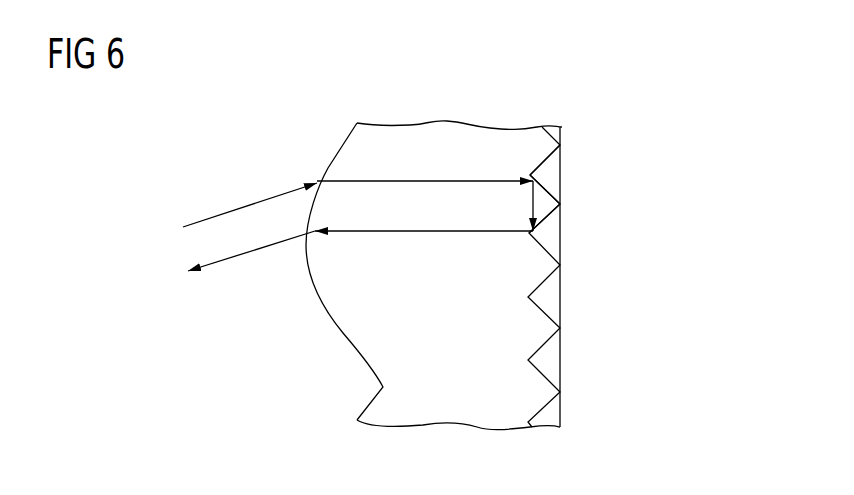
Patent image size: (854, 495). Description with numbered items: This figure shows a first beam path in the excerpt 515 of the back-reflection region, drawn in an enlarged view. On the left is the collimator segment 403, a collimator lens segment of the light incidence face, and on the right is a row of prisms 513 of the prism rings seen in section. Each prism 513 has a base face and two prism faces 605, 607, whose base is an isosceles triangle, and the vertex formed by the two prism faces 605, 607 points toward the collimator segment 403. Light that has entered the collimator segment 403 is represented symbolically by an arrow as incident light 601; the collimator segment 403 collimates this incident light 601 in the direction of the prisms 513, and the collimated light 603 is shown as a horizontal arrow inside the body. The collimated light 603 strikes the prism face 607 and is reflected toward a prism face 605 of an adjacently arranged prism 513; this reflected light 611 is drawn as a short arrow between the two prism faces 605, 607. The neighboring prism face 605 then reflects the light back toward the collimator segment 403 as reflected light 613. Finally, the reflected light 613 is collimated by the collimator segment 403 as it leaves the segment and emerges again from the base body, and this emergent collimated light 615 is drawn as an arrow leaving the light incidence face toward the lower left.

The collimator segment 403 is at (338, 155).
The prism 513 is at (541, 165).
The excerpt 515 is at (664, 193).
The incident light 601 is at (232, 210).
The collimated light 603 is at (443, 179).
The prism face 605 is at (542, 159).
The prism face 607 is at (530, 193).
The reflected light 611 is at (531, 208).
The reflected light 613 is at (390, 233).
The emergent light 615 is at (252, 253).